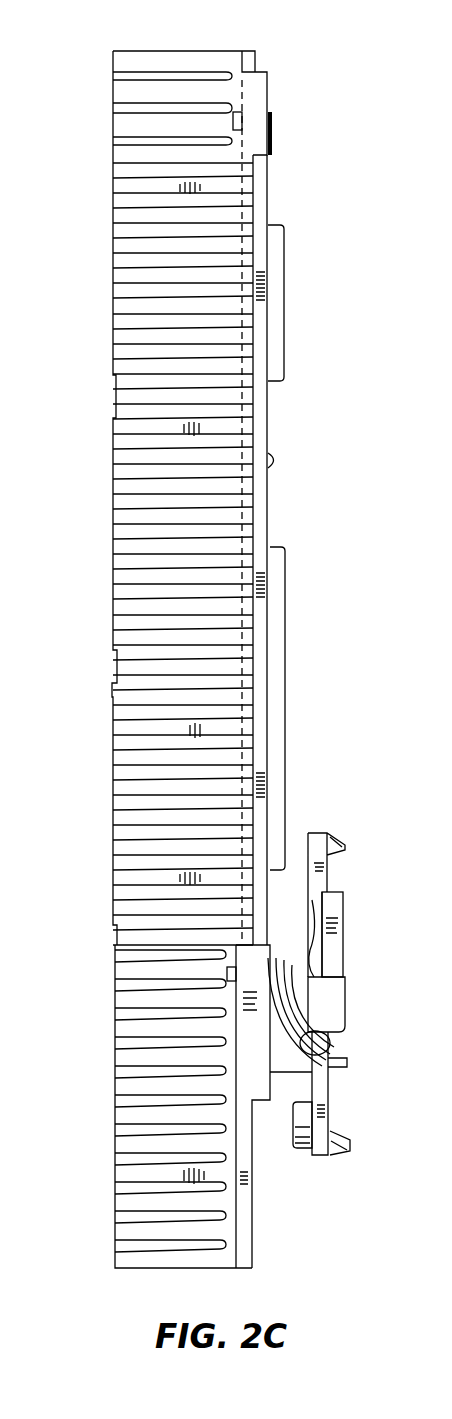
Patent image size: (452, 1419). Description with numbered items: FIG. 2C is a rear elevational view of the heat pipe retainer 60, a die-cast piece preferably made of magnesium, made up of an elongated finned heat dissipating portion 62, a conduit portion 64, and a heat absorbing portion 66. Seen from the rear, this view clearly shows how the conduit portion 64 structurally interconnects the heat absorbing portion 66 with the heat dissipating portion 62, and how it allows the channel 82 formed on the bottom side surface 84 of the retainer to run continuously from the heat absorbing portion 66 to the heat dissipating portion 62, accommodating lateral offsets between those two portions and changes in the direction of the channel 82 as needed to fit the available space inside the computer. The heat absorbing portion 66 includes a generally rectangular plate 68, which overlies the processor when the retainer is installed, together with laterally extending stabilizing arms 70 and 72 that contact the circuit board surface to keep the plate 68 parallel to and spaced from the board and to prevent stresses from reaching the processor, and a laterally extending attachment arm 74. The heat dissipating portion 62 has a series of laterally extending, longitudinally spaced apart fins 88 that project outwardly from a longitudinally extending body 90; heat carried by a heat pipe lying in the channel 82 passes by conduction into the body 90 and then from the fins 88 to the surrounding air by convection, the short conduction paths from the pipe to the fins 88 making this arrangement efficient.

The heat pipe retainer 60 is at (114, 581).
The heat dissipating portion 62 is at (114, 762).
The conduit portion 64 is at (293, 1081).
The heat absorbing portion 66 is at (358, 901).
The plate 68 is at (353, 950).
The stabilizing arm 70 is at (326, 841).
The stabilizing arm 72 is at (330, 1165).
The attachment arm 74 is at (301, 1156).
The channel 82 is at (276, 224).
The bottom side surface 84 is at (268, 526).
The fins 88 is at (121, 88).
The body 90 is at (213, 51).